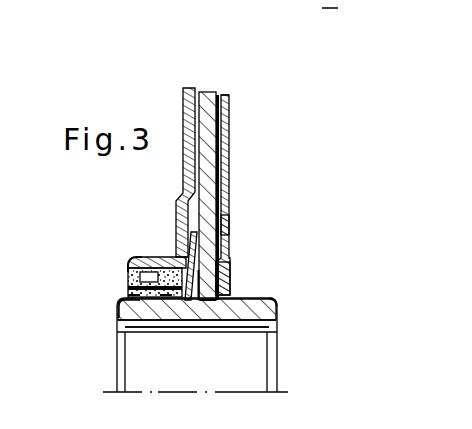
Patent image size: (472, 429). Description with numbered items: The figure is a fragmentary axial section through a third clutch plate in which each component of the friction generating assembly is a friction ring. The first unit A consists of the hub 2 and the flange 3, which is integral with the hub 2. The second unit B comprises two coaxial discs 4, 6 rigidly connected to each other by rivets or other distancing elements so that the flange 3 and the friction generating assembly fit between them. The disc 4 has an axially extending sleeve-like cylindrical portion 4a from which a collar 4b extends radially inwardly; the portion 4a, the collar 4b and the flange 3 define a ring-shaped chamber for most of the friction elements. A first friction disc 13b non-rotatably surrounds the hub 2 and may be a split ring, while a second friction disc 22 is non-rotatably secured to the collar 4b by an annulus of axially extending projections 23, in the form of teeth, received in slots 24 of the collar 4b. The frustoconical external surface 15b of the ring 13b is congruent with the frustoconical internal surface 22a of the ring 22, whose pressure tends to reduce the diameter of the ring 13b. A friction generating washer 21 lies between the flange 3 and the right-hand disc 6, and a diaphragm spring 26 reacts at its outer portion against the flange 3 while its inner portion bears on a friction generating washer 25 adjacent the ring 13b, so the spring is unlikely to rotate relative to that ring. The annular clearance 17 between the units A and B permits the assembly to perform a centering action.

The hub 2 is at (258, 301).
The flange 3 is at (214, 124).
The disc 4 is at (186, 110).
The sleeve-like cylindrical portion 4a is at (139, 258).
The collar 4b is at (128, 270).
The disc 6 is at (229, 160).
The first friction disc 13b is at (133, 292).
The frustoconical external surface 15b is at (151, 258).
The annular clearance 17 is at (243, 333).
The friction generating washer 21 is at (230, 263).
The second friction disc 22 is at (130, 305).
The frustoconical internal surface 22a is at (165, 295).
The axially extending projections 23 is at (128, 282).
The slots 24 is at (127, 297).
The friction generating washer 25 is at (207, 302).
The diaphragm spring 26 is at (230, 226).
The first unit A is at (283, 318).
The second unit B is at (233, 91).